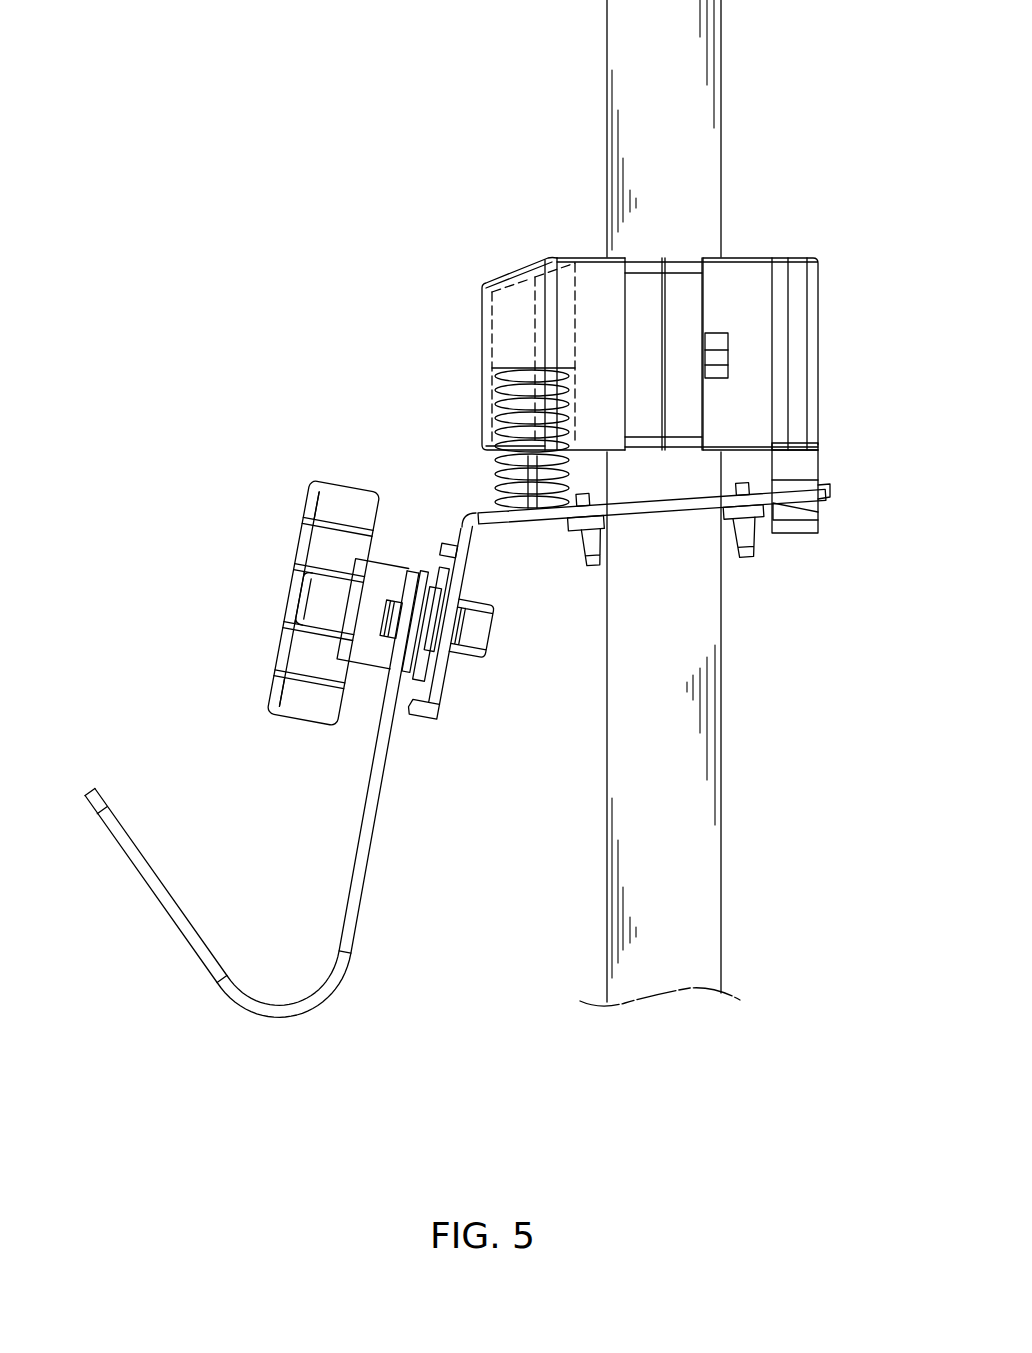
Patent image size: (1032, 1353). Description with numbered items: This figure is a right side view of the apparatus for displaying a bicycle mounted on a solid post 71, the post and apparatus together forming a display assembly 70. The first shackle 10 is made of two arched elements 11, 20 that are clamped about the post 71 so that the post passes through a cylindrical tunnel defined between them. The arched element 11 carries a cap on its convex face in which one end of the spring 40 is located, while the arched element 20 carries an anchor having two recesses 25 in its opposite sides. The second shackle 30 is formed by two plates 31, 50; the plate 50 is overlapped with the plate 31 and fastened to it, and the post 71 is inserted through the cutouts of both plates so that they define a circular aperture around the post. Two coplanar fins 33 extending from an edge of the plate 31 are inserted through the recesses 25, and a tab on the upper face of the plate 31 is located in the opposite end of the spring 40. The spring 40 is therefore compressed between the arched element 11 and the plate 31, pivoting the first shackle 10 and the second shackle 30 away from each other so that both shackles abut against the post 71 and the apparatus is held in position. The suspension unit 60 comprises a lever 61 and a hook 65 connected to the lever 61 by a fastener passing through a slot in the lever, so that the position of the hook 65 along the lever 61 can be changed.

The first shackle 10 is at (681, 306).
The arched element 11 is at (613, 255).
The arched element 20 is at (745, 258).
The recess 25 is at (806, 494).
The second shackle 30 is at (643, 544).
The plate 31 is at (503, 522).
The coplanar fin 33 is at (813, 500).
The spring 40 is at (560, 508).
The plate 50 is at (640, 526).
The suspension unit 60 is at (292, 748).
The lever 61 is at (440, 668).
The hook 65 is at (256, 794).
The display assembly 70 is at (480, 164).
The solid post 71 is at (707, 143).